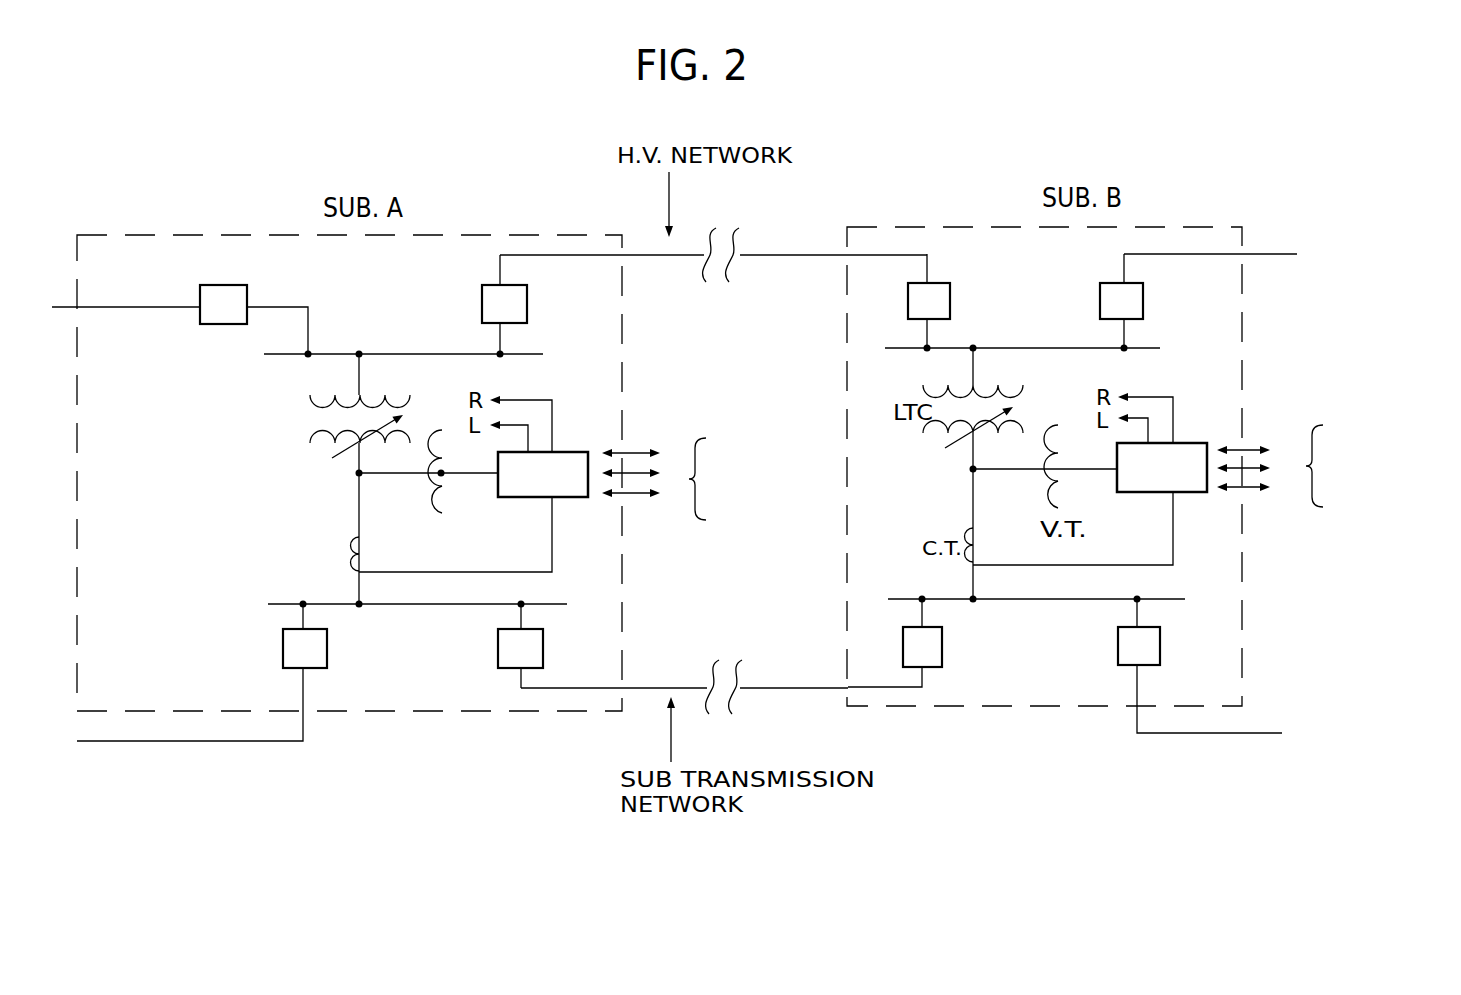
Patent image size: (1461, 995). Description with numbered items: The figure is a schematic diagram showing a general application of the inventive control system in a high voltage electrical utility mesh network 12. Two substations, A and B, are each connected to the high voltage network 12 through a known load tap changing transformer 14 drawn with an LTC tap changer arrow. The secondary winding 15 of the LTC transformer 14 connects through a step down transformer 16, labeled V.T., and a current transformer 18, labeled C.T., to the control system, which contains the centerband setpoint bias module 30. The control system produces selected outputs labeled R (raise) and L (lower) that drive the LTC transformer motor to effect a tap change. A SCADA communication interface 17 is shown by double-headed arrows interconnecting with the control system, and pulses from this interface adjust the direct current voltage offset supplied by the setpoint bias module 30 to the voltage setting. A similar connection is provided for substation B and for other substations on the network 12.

The high voltage network 12 is at (681, 253).
The load tap changing (LTC) transformer 14 is at (328, 442).
The secondary winding 15 is at (404, 427).
The step down transformer 16 is at (429, 482).
The SCADA communication interface 17 is at (711, 440).
The current transformer 18 is at (364, 547).
The centerband setpoint bias module 30 is at (852, 470).